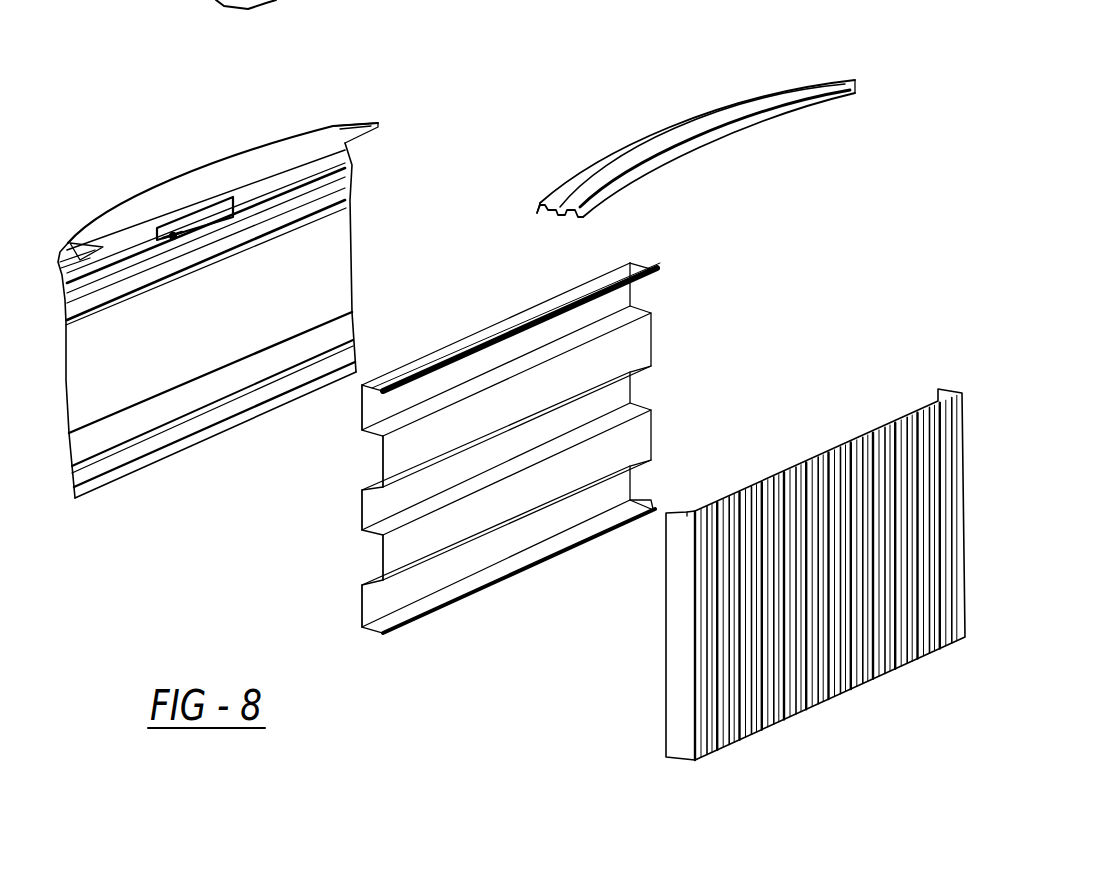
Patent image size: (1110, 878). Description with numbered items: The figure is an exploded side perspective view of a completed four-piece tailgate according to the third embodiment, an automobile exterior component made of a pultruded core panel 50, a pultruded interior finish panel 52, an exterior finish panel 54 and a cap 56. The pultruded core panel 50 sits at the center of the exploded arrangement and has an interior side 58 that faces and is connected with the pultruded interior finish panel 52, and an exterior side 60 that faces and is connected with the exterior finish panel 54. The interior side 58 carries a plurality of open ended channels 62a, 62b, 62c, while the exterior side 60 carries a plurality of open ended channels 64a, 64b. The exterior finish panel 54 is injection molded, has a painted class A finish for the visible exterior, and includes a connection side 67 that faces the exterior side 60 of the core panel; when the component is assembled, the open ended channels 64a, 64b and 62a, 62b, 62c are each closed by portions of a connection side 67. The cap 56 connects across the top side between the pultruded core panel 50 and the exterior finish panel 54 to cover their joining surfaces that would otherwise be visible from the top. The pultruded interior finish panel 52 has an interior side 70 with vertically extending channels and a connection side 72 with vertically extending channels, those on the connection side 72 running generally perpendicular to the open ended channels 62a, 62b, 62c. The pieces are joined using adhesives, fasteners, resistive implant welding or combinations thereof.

The pultruded core panel 50 is at (688, 308).
The pultruded interior finish panel 52 is at (905, 379).
The exterior finish panel 54 is at (393, 130).
The cap 56 is at (840, 83).
The interior side 58 is at (638, 437).
The exterior side 60 is at (465, 330).
The open ended channel 62a is at (373, 403).
The open ended channel 62b is at (375, 504).
The open ended channel 62c is at (373, 598).
The open ended channel 64a is at (362, 450).
The open ended channel 64b is at (370, 562).
The connection side 67 is at (315, 266).
The interior side 70 is at (830, 562).
The connection side 72 is at (820, 453).